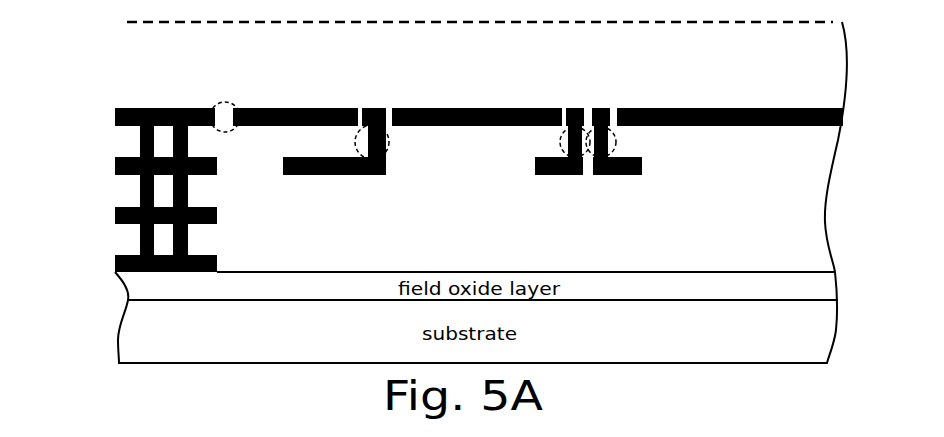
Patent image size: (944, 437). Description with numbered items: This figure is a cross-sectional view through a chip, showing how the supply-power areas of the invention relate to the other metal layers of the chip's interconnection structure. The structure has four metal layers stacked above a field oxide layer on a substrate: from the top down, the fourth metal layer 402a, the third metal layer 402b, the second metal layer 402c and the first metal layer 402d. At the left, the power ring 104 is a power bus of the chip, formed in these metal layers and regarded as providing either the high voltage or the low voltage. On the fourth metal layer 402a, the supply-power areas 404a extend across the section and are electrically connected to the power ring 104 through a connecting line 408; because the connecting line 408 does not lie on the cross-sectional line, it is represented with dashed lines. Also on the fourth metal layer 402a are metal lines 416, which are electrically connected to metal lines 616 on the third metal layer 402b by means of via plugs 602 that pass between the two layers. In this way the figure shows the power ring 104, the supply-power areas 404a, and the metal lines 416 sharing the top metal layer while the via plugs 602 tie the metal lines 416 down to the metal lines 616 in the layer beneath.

The power ring 104 is at (127, 175).
The fourth metal layer 402a is at (115, 117).
The third metal layer 402b is at (115, 166).
The second metal layer 402c is at (115, 216).
The first metal layer 402d is at (115, 263).
The supply-power area 404a is at (295, 108).
The connecting line 408 is at (228, 105).
The metal line 416 is at (378, 108).
The via plug 602 is at (388, 140).
The metal line 616 is at (310, 176).